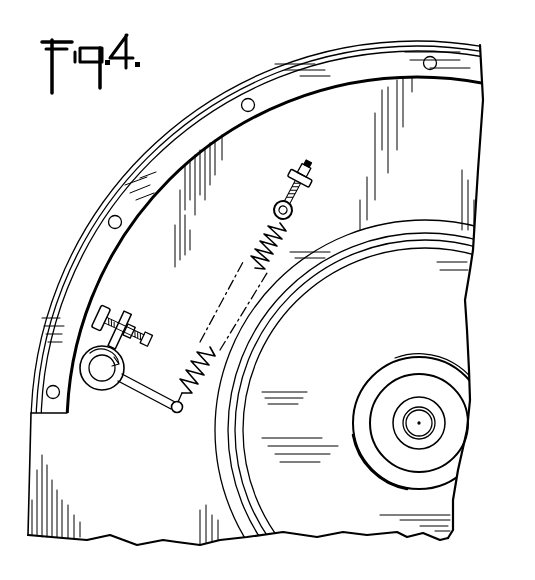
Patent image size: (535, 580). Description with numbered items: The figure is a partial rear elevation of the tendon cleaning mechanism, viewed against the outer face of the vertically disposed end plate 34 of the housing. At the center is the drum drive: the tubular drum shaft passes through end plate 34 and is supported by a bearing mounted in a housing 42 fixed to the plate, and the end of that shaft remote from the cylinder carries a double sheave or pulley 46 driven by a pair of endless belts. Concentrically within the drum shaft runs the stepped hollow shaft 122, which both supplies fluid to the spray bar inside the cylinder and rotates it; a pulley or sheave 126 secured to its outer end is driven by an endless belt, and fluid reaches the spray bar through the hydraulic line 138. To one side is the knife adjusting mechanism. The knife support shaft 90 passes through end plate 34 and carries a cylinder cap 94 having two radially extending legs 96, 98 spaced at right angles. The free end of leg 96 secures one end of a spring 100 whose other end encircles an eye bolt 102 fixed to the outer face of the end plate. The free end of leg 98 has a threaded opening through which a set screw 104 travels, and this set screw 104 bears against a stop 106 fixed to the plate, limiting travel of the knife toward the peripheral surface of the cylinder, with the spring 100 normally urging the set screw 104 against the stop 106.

The end plate 34 is at (437, 121).
The housing 42 is at (395, 227).
The double sheave or pulley 46 is at (440, 238).
The shaft 90 is at (105, 377).
The cylinder cap 94 is at (123, 374).
The leg 96 is at (167, 411).
The leg 98 is at (127, 318).
The spring 100 is at (256, 236).
The eye bolt 102 is at (296, 207).
The set screw 104 is at (138, 333).
The stop 106 is at (110, 308).
The stepped hollow shaft 122 is at (432, 440).
The pulley or sheave 126 is at (435, 328).
The hydraulic line 138 is at (436, 416).